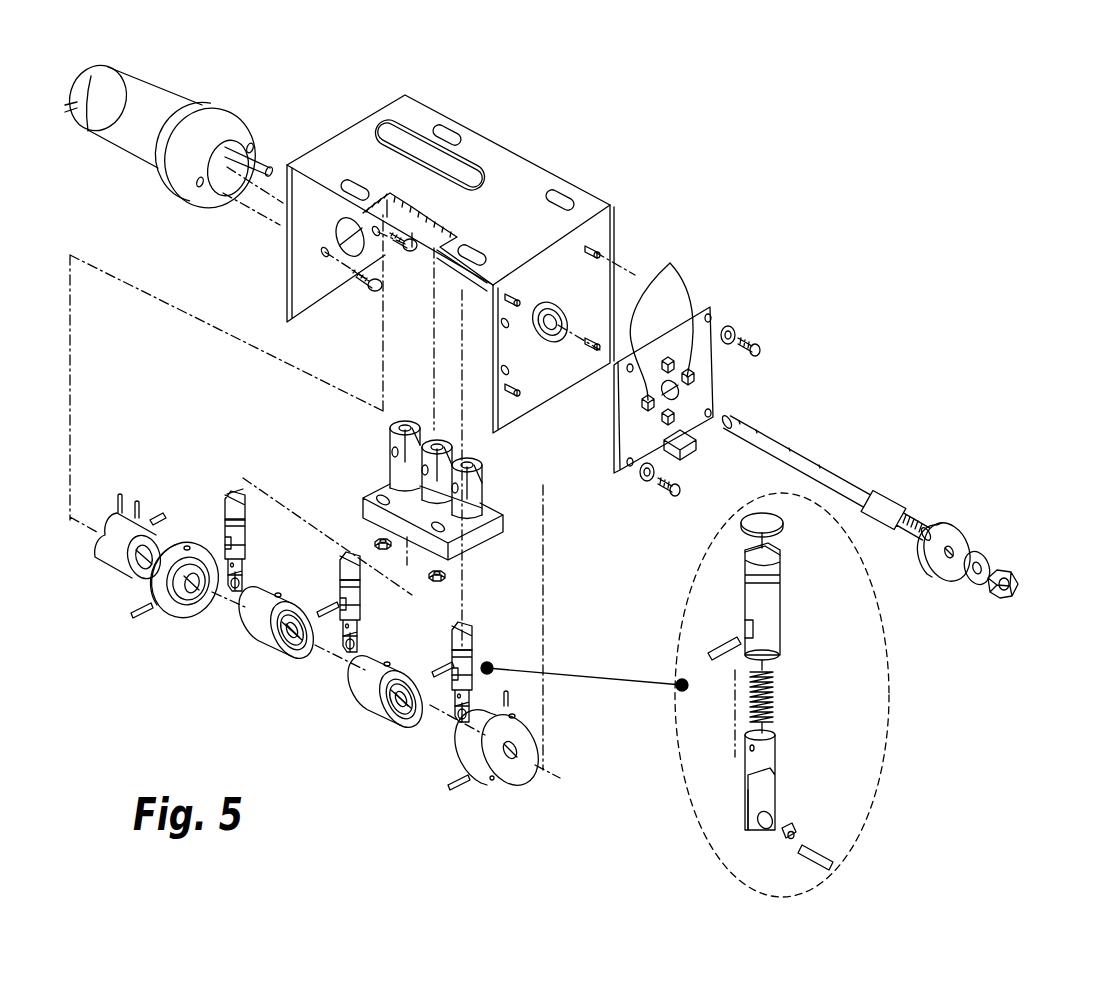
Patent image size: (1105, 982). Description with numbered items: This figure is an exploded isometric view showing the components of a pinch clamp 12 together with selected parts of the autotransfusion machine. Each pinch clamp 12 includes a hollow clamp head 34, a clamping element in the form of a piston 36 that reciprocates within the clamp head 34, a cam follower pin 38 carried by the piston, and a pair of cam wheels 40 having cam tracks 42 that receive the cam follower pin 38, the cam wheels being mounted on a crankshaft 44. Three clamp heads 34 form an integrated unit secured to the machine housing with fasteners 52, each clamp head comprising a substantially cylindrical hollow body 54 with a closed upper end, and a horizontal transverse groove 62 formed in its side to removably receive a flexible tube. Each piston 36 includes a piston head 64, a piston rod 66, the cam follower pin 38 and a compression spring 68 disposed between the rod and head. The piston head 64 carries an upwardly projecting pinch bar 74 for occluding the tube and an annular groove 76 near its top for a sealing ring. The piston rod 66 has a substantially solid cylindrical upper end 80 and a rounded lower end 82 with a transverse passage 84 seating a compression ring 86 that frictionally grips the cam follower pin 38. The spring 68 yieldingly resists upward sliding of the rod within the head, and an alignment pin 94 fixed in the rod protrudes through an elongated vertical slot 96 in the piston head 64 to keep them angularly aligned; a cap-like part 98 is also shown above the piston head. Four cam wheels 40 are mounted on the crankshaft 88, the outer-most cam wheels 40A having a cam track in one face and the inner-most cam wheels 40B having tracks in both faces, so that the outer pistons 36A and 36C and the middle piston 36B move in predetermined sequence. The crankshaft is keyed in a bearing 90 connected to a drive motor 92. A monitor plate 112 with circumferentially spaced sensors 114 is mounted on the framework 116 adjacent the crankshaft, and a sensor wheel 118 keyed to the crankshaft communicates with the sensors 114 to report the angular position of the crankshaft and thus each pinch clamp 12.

The pinch clamp 12 is at (967, 159).
The clamp head 34 is at (482, 468).
The piston 36 is at (247, 548).
The outer-most piston 36A is at (245, 505).
The middle piston 36B is at (340, 595).
The outer-most piston 36C is at (466, 627).
The cam follower pin 38 is at (245, 597).
The cam wheel 40 is at (173, 610).
The outer-most cam wheel 40A is at (155, 588).
The inner-most cam wheel 40B is at (510, 785).
The cam track 42 is at (188, 578).
The crankshaft 44 is at (863, 490).
The fastener 52 is at (437, 585).
The hollow body 54 is at (483, 492).
The transverse groove 62 is at (460, 488).
The piston head 64 is at (247, 530).
The piston rod 66 is at (243, 575).
The compression spring 68 is at (772, 697).
The pinch bar 74 is at (233, 497).
The annular groove 76 is at (748, 587).
The upper end 80 is at (745, 737).
The rounded lower end 82 is at (745, 823).
The transverse passage 84 is at (758, 837).
The compression ring 86 is at (790, 842).
The crankshaft 88 is at (890, 517).
The bearing 90 is at (97, 558).
The drive motor 92 is at (147, 128).
The alignment pin 94 is at (718, 655).
The elongated vertical slot 96 is at (748, 627).
The cap disc 98 is at (785, 515).
The monitor plate 112 is at (702, 352).
The sensors 114 is at (675, 321).
The framework 116 is at (563, 257).
The sensor wheel 118 is at (955, 538).